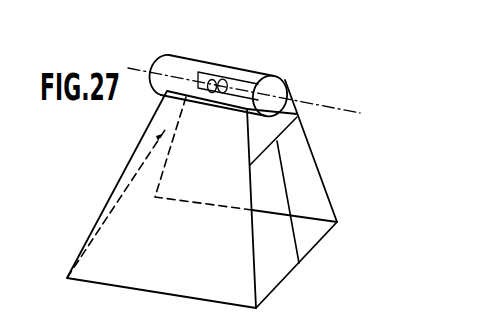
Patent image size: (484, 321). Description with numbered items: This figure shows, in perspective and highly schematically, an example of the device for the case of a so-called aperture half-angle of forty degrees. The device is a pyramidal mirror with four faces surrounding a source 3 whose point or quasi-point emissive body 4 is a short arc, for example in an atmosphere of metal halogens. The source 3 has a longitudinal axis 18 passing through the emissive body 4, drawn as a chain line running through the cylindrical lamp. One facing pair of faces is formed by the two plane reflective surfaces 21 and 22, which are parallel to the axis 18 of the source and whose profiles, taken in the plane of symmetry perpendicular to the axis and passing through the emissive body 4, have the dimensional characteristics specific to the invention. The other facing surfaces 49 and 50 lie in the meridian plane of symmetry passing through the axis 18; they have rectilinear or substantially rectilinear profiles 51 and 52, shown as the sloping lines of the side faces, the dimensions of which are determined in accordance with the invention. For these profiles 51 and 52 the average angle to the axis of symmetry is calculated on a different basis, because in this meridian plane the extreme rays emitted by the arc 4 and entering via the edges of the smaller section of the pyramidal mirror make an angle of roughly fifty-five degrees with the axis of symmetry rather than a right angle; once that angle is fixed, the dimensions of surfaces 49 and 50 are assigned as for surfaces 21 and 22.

The source 3 is at (185, 57).
The emissive body 4 is at (216, 76).
The longitudinal axis 18 is at (300, 98).
The plane reflective surface 21 is at (170, 109).
The plane reflective surface 22 is at (289, 113).
The facing surface 49 is at (278, 262).
The facing surface 50 is at (118, 207).
The rectilinear profile 51 is at (283, 186).
The rectilinear profile 52 is at (140, 177).